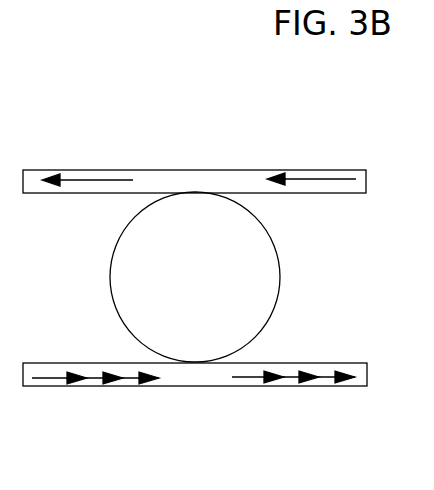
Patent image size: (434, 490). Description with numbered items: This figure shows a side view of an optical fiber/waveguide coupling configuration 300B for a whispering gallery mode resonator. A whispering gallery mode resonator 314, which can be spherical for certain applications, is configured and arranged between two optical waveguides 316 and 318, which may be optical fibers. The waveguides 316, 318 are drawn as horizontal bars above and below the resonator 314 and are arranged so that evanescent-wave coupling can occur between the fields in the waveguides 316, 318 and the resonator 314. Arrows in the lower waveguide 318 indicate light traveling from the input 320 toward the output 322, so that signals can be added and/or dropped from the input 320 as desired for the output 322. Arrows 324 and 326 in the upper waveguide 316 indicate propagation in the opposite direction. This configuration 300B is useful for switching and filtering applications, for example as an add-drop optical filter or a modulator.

The optical fiber/waveguide coupling configuration 300B is at (369, 332).
The whispering gallery mode resonator 314 is at (272, 253).
The optical waveguide 316 is at (87, 197).
The optical waveguide 318 is at (125, 363).
The input 320 is at (93, 380).
The output 322 is at (295, 375).
The upper belt movement direction 324 is at (270, 173).
The upper belt movement direction 326 is at (80, 177).